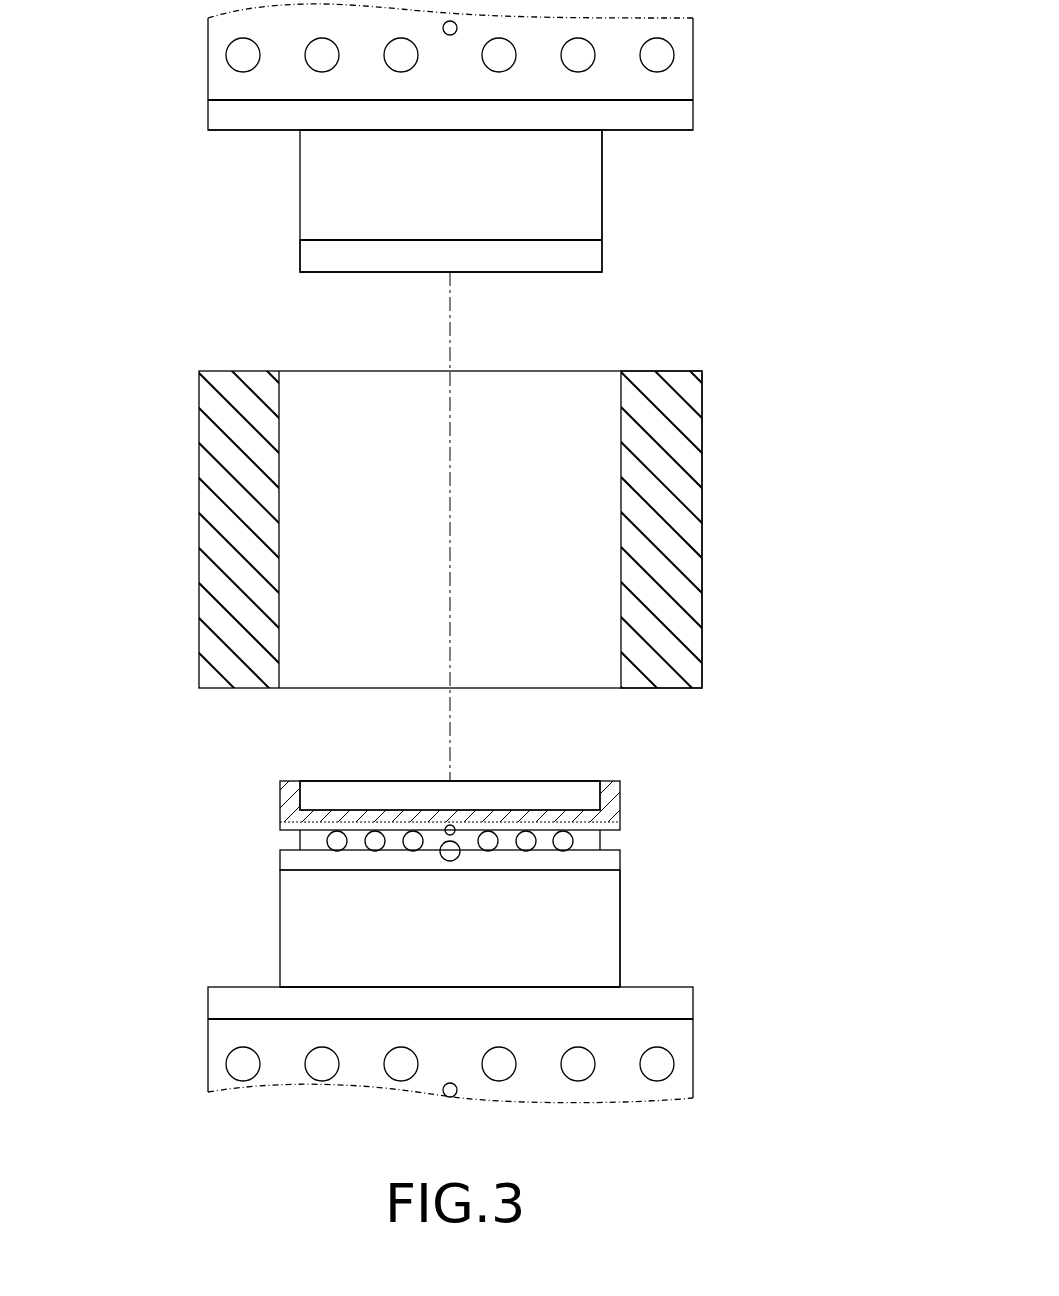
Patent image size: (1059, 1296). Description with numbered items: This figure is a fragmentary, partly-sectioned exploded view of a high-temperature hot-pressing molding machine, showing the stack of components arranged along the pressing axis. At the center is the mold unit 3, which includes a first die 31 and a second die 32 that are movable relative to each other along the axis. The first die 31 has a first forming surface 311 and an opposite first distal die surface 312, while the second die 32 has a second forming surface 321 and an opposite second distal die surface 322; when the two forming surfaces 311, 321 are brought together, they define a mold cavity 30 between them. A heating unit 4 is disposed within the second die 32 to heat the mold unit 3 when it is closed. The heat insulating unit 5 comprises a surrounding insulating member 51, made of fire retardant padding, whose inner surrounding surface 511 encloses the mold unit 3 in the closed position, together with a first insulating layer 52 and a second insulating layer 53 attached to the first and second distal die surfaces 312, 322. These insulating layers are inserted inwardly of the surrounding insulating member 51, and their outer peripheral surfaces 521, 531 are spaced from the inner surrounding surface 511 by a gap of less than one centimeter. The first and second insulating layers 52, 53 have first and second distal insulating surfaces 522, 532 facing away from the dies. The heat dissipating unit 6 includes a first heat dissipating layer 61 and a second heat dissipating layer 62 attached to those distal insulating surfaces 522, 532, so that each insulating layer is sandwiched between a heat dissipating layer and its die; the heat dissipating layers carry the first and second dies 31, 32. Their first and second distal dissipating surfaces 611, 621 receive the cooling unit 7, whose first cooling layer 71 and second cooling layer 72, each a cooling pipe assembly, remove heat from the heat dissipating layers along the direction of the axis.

The mold unit 3 is at (604, 260).
The mold cavity 30 is at (560, 790).
The first die 31 is at (300, 260).
The first forming surface 311 is at (341, 272).
The first distal die surface 312 is at (341, 240).
The second die 32 is at (280, 790).
The second forming surface 321 is at (355, 815).
The second distal die surface 322 is at (320, 870).
The heating unit 4 is at (563, 850).
The heat insulating unit 5 is at (708, 545).
The surrounding insulating member 51 is at (702, 465).
The inner surrounding surface 511 is at (279, 490).
The first insulating layer 52 is at (300, 192).
The outer peripheral surface of first insulating layer 521 is at (602, 190).
The first distal insulating surface 522 is at (333, 130).
The second insulating layer 53 is at (280, 935).
The outer peripheral surface of second insulating layer 531 is at (620, 942).
The second distal insulating surface 532 is at (302, 987).
The heat dissipating unit 6 is at (695, 115).
The first heat dissipating layer 61 is at (208, 118).
The first distal dissipating surface 611 is at (235, 100).
The second heat dissipating layer 62 is at (208, 1002).
The second distal dissipating surface 621 is at (250, 1019).
The cooling unit 7 is at (695, 55).
The first cooling layer 71 is at (208, 30).
The second cooling layer 72 is at (208, 1078).